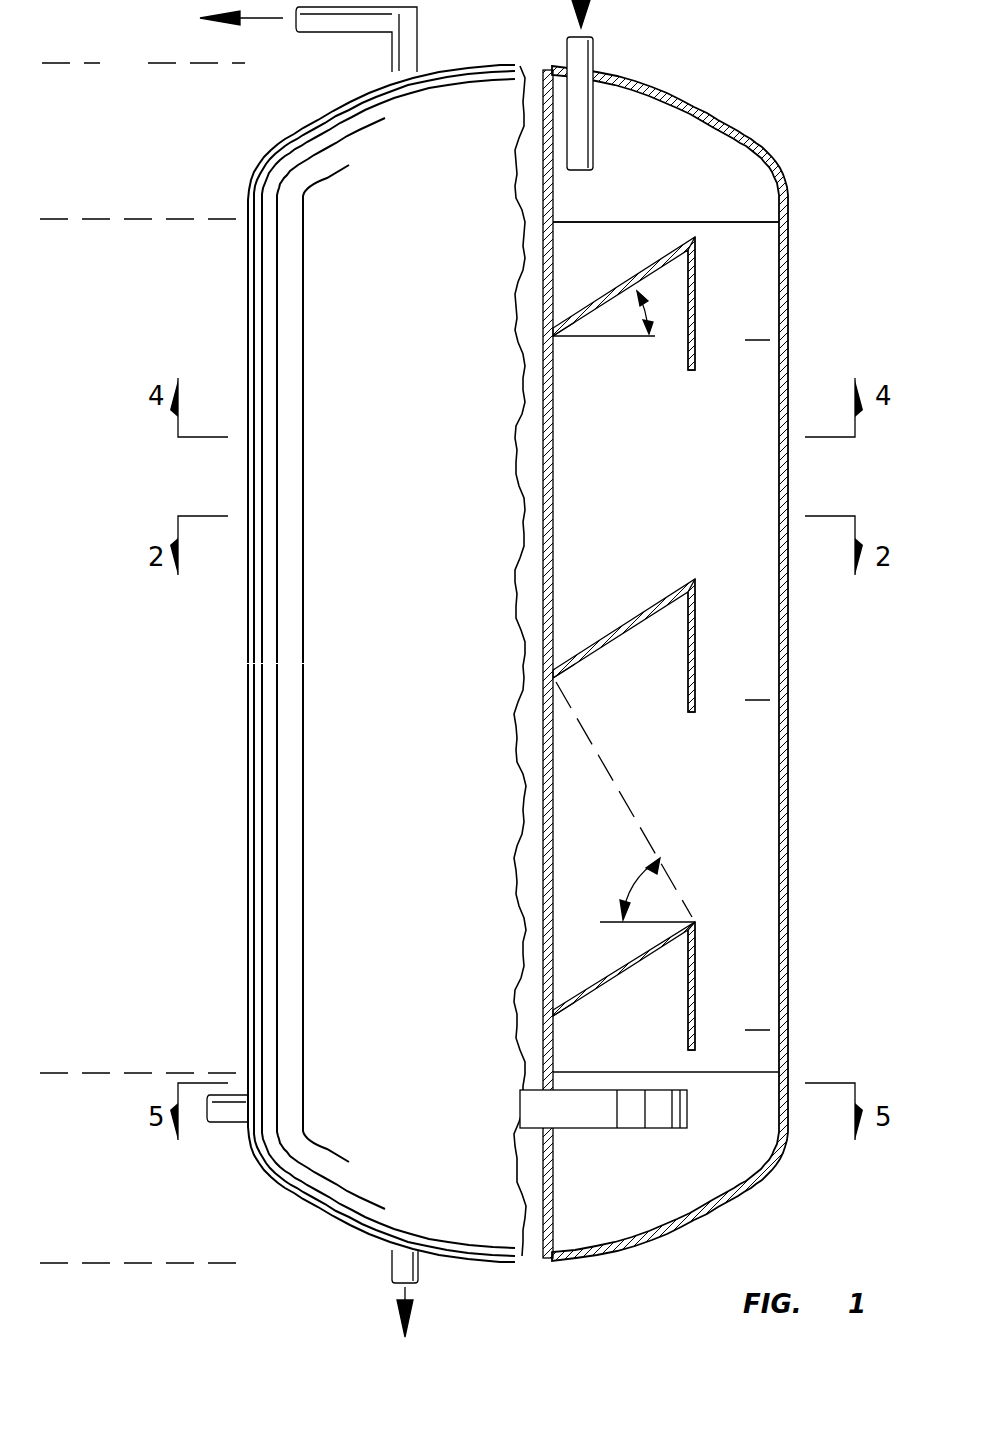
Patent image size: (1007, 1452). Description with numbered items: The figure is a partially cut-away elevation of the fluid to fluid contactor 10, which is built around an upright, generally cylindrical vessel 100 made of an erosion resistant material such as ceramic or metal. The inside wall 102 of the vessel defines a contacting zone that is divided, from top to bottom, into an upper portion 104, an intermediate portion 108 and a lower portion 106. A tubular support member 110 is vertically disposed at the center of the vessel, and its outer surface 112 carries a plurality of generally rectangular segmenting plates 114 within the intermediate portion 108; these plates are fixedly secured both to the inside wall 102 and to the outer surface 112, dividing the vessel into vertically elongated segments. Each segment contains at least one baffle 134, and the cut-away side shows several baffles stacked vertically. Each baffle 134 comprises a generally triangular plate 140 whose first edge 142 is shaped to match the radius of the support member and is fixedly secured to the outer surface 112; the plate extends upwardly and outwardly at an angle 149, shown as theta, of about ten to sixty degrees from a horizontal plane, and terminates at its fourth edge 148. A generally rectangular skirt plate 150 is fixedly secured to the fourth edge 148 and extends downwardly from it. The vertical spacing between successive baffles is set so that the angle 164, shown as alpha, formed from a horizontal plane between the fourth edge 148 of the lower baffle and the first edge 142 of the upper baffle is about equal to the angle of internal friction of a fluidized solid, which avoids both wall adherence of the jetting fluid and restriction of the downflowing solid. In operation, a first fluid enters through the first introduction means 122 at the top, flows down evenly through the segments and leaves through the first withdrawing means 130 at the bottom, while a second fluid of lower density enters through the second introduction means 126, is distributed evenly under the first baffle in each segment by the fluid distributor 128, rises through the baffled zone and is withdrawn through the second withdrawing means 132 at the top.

The fluid to fluid contactor 10 is at (238, 135).
The generally cylindrical vessel 100 is at (246, 278).
The inside wall 102 is at (782, 272).
The upper portion 104 is at (130, 156).
The lower portion 106 is at (131, 1174).
The intermediate portion 108 is at (131, 616).
The tubular support member 110 is at (522, 70).
The outer surface 112 is at (553, 521).
The generally rectangular segmenting plates 114 is at (634, 454).
The first introduction means 122 is at (595, 57).
The second introduction means 126 is at (222, 1124).
The fluid distributor 128 is at (690, 1100).
The first withdrawing means 130 is at (392, 1266).
The second withdrawing means 132 is at (357, 34).
The baffle 134 is at (744, 340).
The generally triangular plate 140 is at (614, 289).
The first edge 142 is at (556, 340).
The fourth edge 148 is at (697, 240).
The angle 149 is at (656, 325).
The generally rectangular skirt plate 150 is at (696, 292).
The angle 164 is at (626, 905).